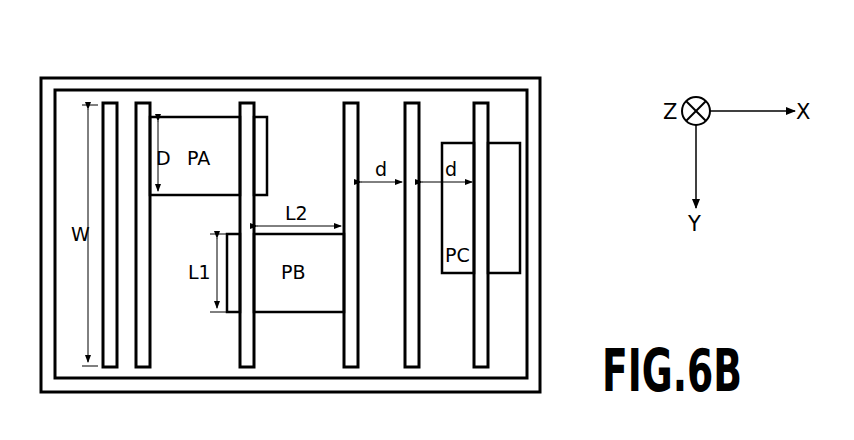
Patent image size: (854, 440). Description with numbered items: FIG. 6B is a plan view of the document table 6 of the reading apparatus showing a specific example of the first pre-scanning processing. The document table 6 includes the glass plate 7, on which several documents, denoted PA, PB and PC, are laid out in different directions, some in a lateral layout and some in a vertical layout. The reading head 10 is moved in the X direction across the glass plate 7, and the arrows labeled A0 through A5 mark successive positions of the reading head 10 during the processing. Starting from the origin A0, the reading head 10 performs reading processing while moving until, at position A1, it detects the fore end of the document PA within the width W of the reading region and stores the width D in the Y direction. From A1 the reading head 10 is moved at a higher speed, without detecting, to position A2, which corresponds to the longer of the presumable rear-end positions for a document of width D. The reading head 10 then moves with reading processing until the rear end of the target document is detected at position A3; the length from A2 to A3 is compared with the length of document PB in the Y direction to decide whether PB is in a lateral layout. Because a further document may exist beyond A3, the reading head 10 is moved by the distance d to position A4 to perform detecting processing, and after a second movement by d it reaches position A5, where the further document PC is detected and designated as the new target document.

The document table 6 is at (565, 246).
The glass plate 7 is at (508, 118).
The reading head 10 is at (110, 366).
The origin A0 is at (108, 82).
The position where the fore end of document PA is detected A1 is at (142, 82).
The position after moving to the presumed rear end A2 is at (246, 82).
The position where the rear end is detected A3 is at (350, 82).
The detecting position after moving distance d A4 is at (411, 82).
The position where document PC is detected A5 is at (479, 82).